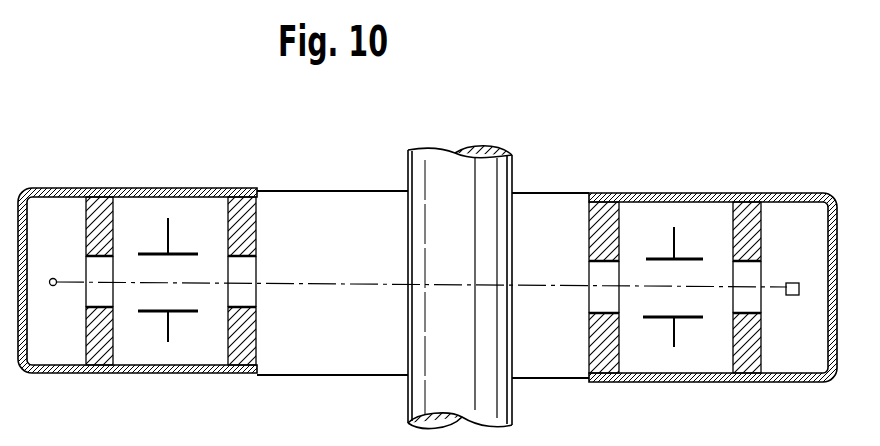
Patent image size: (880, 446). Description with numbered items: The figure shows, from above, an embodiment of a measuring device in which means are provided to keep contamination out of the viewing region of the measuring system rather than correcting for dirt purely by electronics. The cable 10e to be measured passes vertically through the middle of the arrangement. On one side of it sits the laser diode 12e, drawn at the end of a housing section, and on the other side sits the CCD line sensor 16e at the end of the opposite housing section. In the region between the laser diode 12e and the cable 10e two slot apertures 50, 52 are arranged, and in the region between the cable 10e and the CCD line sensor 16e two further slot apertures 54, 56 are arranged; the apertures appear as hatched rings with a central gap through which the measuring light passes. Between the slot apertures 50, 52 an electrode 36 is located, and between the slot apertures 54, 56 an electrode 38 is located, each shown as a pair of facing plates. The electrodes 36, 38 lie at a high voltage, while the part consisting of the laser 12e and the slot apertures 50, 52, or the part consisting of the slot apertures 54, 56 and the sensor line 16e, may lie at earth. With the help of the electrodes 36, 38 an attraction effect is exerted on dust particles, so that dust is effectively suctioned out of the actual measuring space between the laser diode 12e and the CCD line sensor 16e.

The cable 10e is at (455, 168).
The laser diode 12e is at (52, 278).
The CCD line sensor 16e is at (792, 283).
The electrode 36 is at (190, 313).
The electrode 38 is at (655, 318).
The slot aperture 50 is at (105, 229).
The slot aperture 52 is at (250, 231).
The slot aperture 54 is at (598, 229).
The slot aperture 56 is at (737, 229).